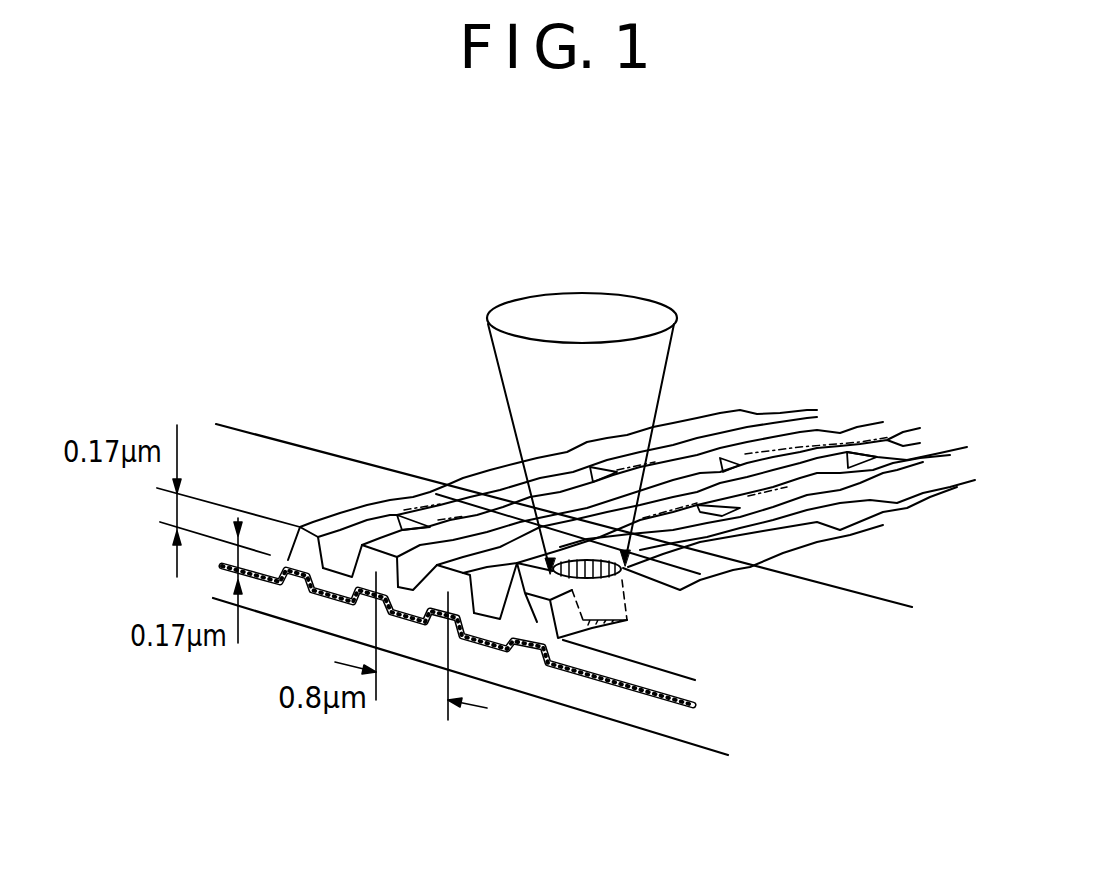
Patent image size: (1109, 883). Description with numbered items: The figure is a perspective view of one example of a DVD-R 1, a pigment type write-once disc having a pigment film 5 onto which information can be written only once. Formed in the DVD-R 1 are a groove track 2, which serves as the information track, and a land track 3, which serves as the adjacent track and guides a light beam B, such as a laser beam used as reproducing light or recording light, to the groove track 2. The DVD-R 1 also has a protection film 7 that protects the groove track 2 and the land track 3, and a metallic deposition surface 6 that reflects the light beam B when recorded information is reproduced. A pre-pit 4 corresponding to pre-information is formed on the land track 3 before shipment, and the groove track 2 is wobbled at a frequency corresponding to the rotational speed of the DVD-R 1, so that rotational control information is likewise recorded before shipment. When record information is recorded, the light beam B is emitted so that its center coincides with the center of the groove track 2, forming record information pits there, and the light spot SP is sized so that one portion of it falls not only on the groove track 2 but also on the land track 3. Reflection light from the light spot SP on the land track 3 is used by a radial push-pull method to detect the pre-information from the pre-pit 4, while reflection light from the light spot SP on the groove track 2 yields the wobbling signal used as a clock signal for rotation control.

The DVD-R 1 is at (788, 693).
The groove track 2 is at (387, 550).
The land track 3 is at (347, 577).
The pre-pit 4 is at (437, 510).
The pigment film 5 is at (687, 677).
The metallic deposition surface 6 is at (624, 690).
The protection film 7 is at (232, 437).
The light beam B is at (672, 347).
The light spot SP is at (633, 590).